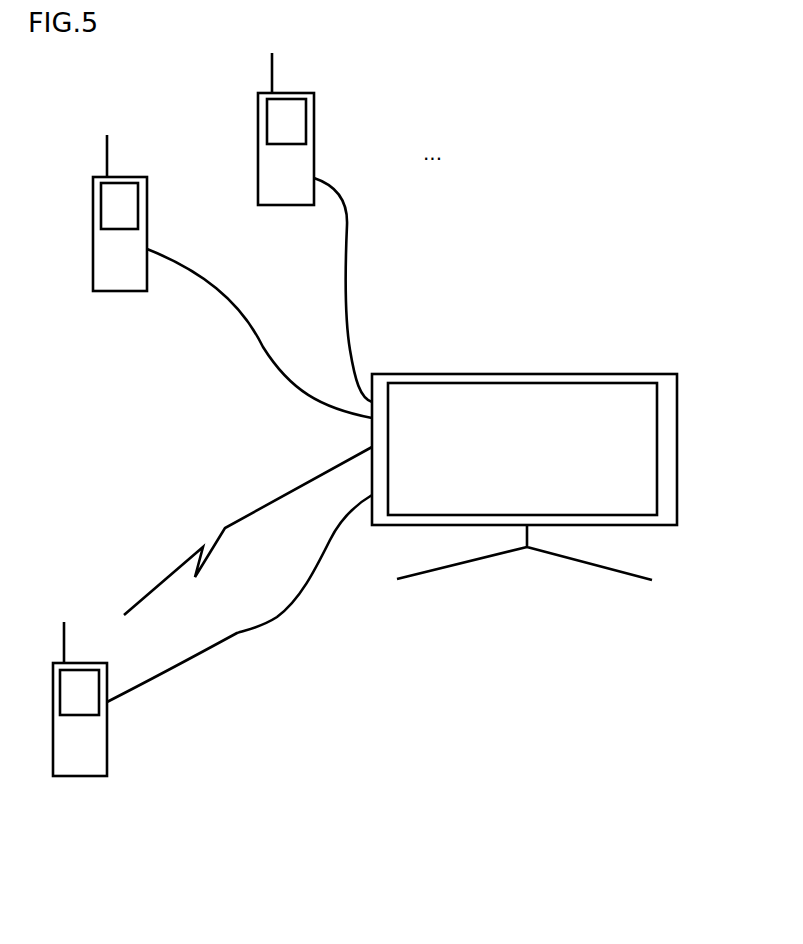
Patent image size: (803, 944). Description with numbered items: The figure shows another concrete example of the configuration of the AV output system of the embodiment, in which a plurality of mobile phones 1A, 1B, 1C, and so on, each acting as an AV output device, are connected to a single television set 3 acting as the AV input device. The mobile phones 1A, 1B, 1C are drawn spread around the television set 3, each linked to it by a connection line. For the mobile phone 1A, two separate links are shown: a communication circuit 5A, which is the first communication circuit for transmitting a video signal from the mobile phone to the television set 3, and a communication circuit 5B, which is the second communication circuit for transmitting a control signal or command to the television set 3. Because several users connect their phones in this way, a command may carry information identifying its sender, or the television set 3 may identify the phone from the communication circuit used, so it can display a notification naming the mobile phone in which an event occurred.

The television set 3 is at (640, 374).
The mobile phone 1A is at (92, 663).
The mobile phone 1B is at (132, 177).
The mobile phone 1C is at (300, 93).
The communication circuit 5A is at (203, 547).
The communication circuit 5B is at (188, 657).